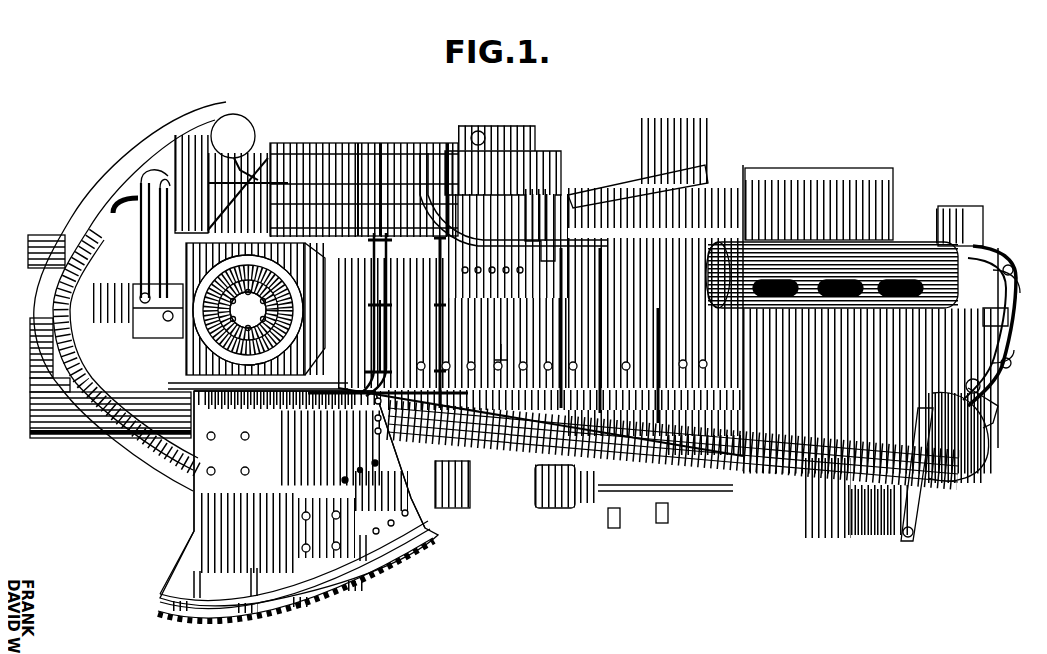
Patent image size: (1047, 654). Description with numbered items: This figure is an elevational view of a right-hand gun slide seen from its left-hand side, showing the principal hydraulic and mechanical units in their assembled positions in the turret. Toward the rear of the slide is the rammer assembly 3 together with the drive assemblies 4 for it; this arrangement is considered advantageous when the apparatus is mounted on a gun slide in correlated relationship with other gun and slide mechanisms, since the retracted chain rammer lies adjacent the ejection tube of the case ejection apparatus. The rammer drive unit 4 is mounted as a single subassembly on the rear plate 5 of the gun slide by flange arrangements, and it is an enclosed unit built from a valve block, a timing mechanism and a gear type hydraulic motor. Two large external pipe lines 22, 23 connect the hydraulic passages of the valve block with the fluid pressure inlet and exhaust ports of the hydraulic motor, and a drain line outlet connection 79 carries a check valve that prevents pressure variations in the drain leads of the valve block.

The rammer assembly 3 is at (978, 453).
The rammer drive unit assembly 4 is at (997, 402).
The rear plate 5 is at (1017, 307).
The external pipe line 22 is at (1012, 290).
The external pipe line 23 is at (1018, 262).
The drain line outlet connection 79 is at (923, 233).